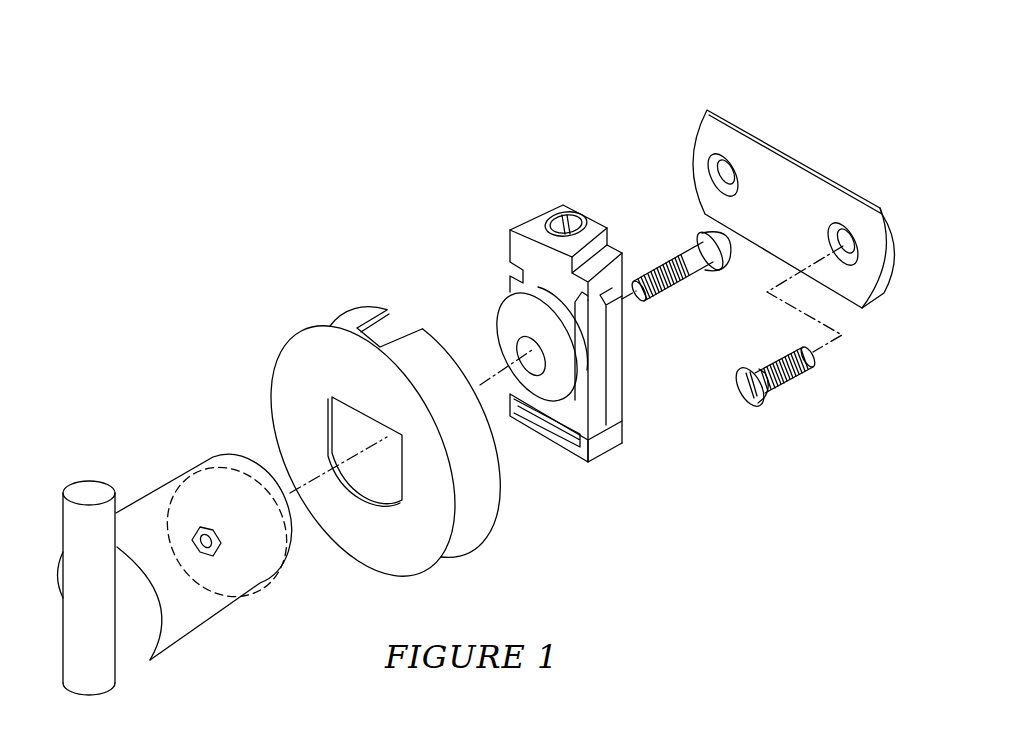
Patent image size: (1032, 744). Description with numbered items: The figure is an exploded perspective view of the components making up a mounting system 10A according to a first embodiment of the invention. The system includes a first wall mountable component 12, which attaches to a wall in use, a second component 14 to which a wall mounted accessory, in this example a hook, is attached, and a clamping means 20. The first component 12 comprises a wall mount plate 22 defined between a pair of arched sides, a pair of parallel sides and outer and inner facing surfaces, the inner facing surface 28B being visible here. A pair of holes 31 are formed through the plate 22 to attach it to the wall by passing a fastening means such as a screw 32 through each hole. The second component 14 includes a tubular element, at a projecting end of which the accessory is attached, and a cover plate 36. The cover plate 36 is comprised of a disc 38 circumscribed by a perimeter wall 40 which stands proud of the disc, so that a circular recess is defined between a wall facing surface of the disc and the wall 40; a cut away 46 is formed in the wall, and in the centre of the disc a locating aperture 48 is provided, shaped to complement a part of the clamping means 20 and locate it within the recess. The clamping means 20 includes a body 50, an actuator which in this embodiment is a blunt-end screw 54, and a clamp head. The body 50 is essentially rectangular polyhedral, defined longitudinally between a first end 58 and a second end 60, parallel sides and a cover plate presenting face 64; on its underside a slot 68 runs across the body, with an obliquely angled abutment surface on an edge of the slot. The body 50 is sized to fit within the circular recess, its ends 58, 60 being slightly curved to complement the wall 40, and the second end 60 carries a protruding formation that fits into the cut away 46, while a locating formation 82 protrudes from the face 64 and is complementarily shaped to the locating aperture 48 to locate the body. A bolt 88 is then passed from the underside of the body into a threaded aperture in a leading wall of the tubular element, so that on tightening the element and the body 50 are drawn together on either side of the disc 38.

The mounting system 10A is at (596, 324).
The first wall mountable component 12 is at (762, 180).
The second component 14 is at (205, 662).
The clamping means 20 is at (569, 324).
The wall mount plate 22 is at (756, 160).
The inner facing surface 28B is at (788, 187).
The holes 31 is at (708, 174).
The screw 32 is at (788, 380).
The cover plate 36 is at (418, 428).
The disc 38 is at (445, 525).
The perimeter wall 40 is at (477, 518).
The cut away 46 is at (380, 317).
The locating aperture 48 is at (373, 482).
The body 50 is at (607, 440).
The blunt-end screw 54 is at (571, 212).
The first end 58 is at (562, 449).
The second end 60 is at (538, 218).
The cover plate presenting face 64 is at (532, 252).
The slot 68 is at (632, 364).
The locating formation 82 is at (530, 392).
The bolt 88 is at (677, 257).